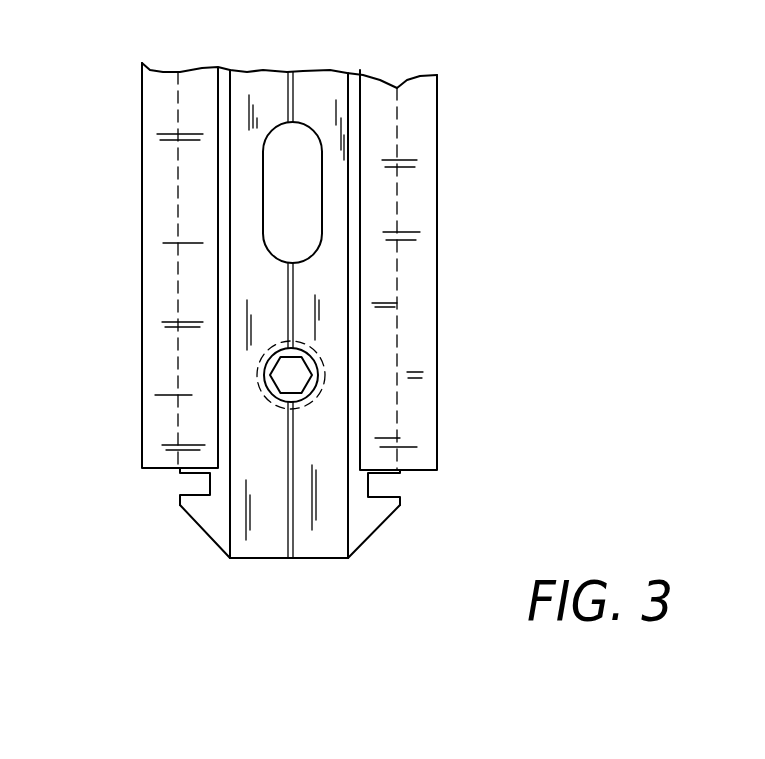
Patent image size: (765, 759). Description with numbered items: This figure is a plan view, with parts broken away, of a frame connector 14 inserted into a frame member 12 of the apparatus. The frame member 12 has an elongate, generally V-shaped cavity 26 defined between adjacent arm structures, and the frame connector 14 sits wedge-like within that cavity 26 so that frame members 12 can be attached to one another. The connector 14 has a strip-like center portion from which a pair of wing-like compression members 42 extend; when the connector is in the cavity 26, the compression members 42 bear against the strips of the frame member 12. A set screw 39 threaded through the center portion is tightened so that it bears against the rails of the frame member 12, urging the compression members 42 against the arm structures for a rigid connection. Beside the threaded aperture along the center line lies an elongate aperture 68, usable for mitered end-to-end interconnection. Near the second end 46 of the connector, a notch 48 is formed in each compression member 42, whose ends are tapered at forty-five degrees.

The frame member 12 is at (420, 301).
The frame connector 14 is at (337, 255).
The cavity 26 is at (218, 68).
The elongate aperture 68 is at (297, 168).
The set screw 39 is at (270, 373).
The notch 48 is at (203, 481).
The compression member 42 is at (210, 534).
The second end 46 is at (323, 562).